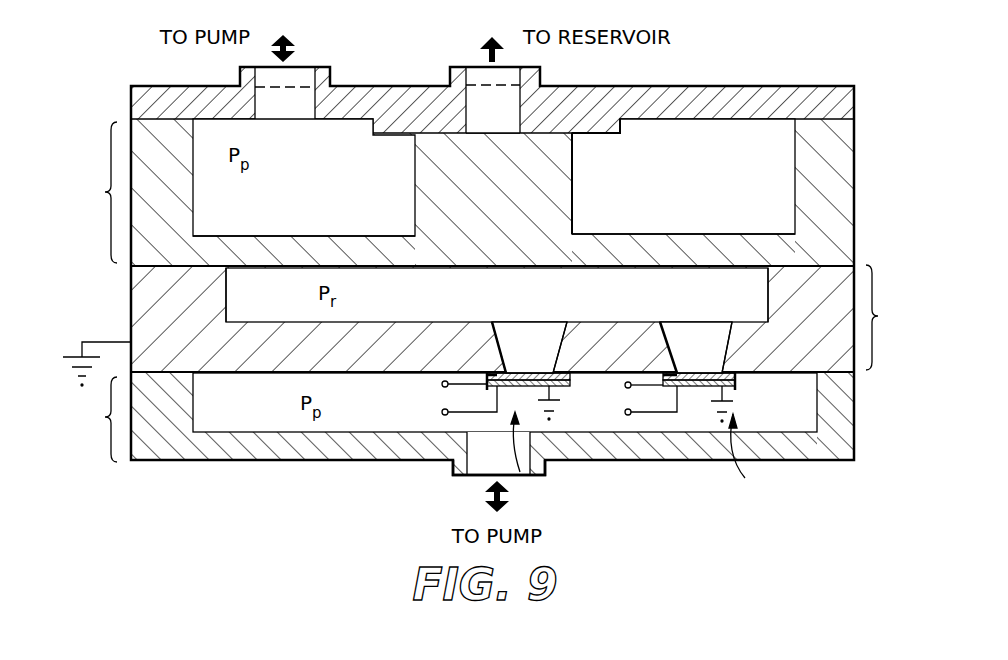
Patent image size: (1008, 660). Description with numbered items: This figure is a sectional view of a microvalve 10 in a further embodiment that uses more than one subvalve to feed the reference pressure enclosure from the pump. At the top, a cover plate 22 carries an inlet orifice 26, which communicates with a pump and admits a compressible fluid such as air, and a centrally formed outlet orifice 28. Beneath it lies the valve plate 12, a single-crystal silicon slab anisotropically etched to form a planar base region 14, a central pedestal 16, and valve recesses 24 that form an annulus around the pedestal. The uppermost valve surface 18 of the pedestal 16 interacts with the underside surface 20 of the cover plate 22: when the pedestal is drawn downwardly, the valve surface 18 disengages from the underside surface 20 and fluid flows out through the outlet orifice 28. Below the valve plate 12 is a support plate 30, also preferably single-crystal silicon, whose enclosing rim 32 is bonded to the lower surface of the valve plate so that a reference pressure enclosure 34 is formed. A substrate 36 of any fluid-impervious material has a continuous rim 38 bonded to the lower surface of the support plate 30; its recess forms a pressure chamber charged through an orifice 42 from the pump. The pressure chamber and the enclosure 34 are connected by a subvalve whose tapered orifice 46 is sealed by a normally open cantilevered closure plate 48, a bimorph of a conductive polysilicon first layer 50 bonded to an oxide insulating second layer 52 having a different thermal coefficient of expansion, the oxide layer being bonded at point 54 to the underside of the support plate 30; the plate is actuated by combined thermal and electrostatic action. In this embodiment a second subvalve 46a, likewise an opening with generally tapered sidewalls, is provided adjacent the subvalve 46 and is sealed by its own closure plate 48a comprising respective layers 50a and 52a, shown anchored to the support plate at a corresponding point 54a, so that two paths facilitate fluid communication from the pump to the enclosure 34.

The microvalve 10 is at (485, 272).
The valve plate 12 is at (466, 192).
The planar base region 14 is at (306, 236).
The central pedestal 16 is at (563, 193).
The uppermost valve surface 18 is at (500, 128).
The underside surface 20 is at (600, 135).
The cover plate 22 is at (727, 97).
The valve recesses 24 is at (323, 186).
The inlet orifice 26 is at (302, 82).
The outlet orifice 28 is at (508, 72).
The support plate 30 is at (519, 318).
The enclosing rim 32 is at (207, 292).
The reference pressure enclosure 34 is at (534, 310).
The substrate 36 is at (466, 417).
The continuous rim 38 is at (178, 402).
The orifice 42 is at (483, 478).
The subvalve orifice 46 is at (690, 345).
The second subvalve 46a is at (512, 333).
The cantilevered closure plate 48 is at (757, 454).
The flow arrow 48a is at (518, 445).
The first layer 50 is at (735, 384).
The first layer of second subvalve closure plate 50a is at (573, 392).
The second layer 52 is at (742, 371).
The second layer of second subvalve closure plate 52a is at (560, 372).
The bond point 54 is at (674, 370).
The flap hinge 54a is at (492, 362).